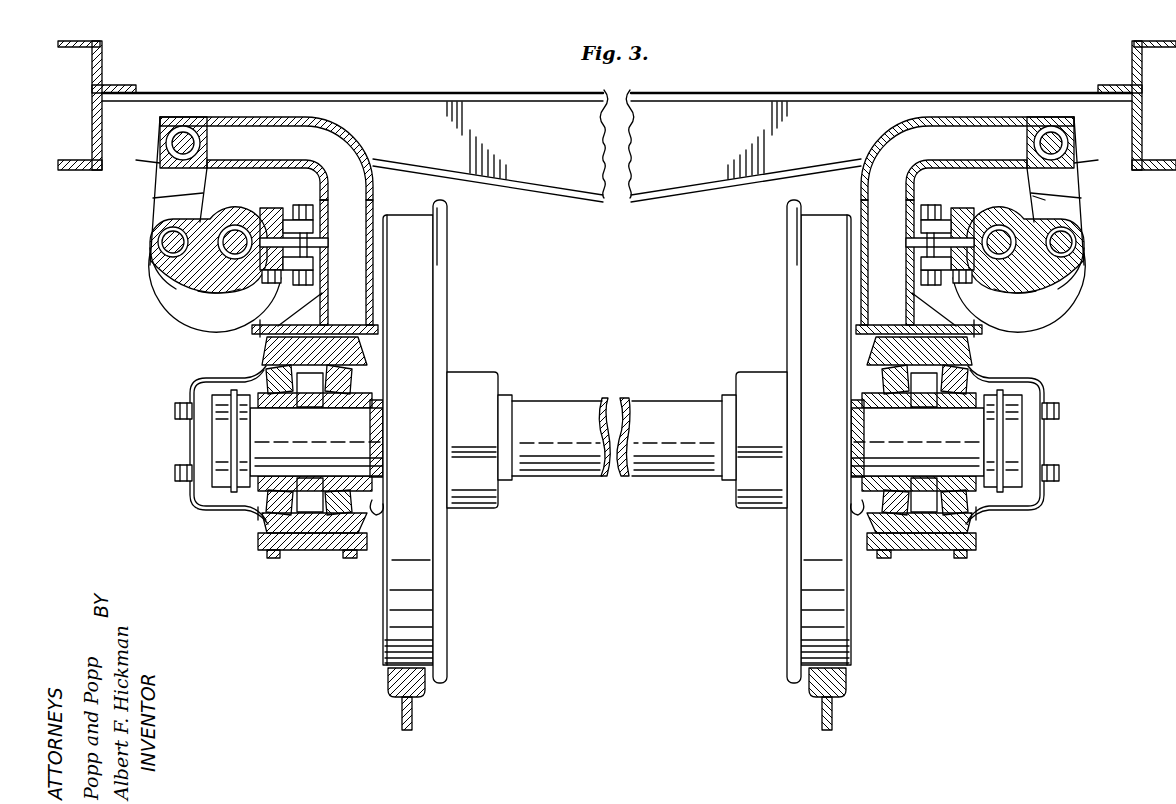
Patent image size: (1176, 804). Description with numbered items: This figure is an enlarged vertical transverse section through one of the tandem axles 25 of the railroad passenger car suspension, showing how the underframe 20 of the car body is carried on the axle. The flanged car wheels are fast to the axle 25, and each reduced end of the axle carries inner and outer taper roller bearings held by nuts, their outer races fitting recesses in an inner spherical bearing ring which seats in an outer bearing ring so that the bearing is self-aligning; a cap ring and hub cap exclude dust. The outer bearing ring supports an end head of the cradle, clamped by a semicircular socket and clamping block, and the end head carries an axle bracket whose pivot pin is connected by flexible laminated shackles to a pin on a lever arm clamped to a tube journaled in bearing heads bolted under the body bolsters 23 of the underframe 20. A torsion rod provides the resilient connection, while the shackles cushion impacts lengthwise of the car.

The underframe 20 is at (883, 82).
The body bolsters 23 is at (447, 90).
The tandem axles 25 is at (626, 399).